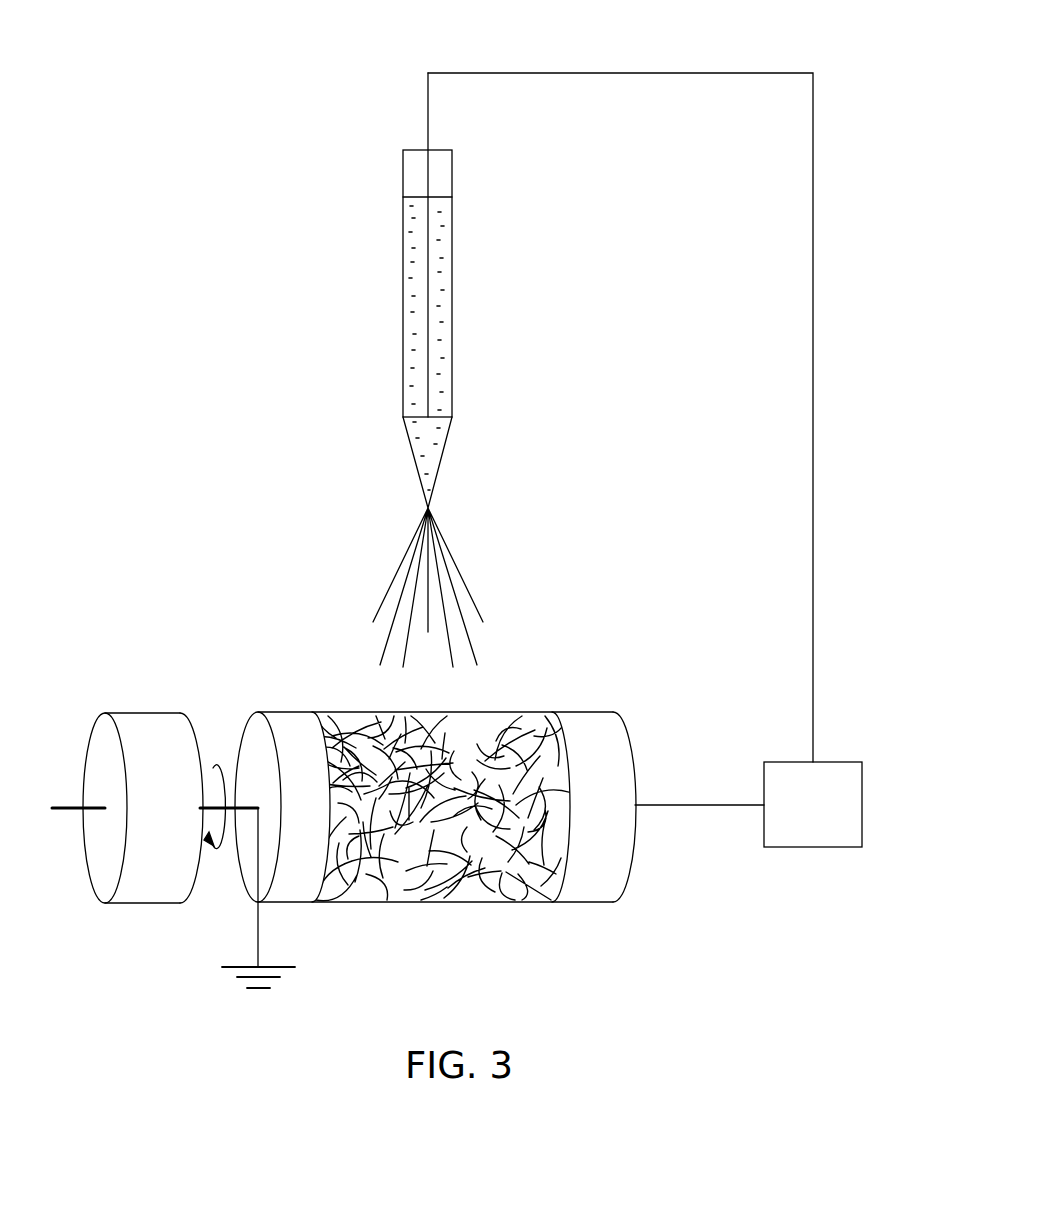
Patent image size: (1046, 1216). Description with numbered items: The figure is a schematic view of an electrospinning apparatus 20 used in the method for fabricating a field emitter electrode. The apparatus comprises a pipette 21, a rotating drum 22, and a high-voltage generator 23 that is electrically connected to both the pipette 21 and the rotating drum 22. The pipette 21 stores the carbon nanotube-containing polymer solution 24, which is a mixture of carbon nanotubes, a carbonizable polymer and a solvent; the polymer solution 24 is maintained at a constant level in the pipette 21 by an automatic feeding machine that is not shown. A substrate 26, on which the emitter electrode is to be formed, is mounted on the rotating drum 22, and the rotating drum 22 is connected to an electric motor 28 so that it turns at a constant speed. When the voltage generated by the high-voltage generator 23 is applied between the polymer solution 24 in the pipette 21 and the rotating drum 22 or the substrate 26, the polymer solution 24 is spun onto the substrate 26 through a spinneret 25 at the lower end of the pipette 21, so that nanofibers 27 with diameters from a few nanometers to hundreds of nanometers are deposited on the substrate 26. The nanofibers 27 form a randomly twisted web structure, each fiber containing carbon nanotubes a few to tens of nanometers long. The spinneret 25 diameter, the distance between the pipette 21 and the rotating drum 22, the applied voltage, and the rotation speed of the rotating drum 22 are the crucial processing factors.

The electrospinning apparatus 20 is at (466, 37).
The pipette 21 is at (403, 228).
The rotating drum 22 is at (588, 893).
The high-voltage generator 23 is at (840, 773).
The polymer solution 24 is at (413, 337).
The spinneret 25 is at (428, 508).
The substrate 26 is at (332, 900).
The nanofibers 27 is at (487, 738).
The electric motor 28 is at (143, 890).